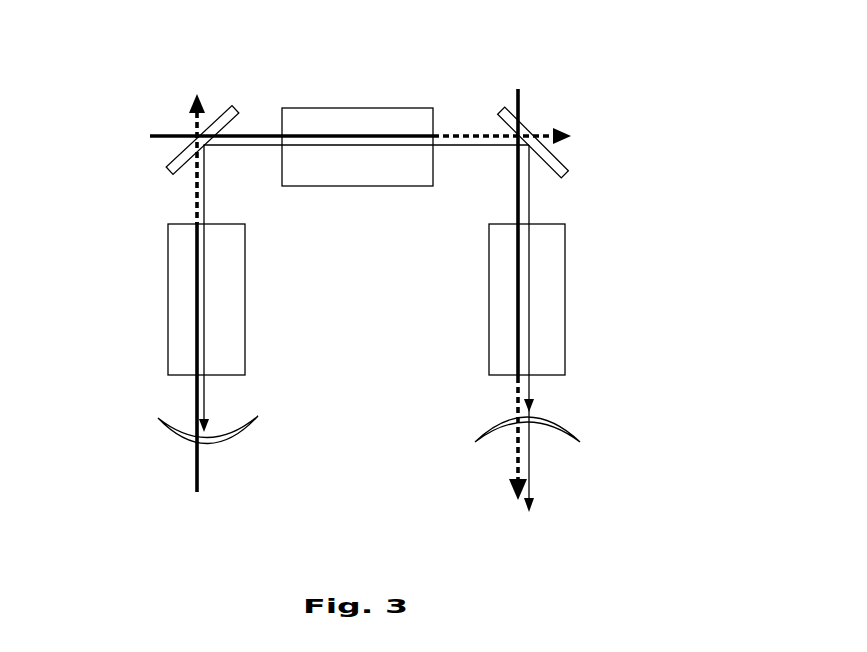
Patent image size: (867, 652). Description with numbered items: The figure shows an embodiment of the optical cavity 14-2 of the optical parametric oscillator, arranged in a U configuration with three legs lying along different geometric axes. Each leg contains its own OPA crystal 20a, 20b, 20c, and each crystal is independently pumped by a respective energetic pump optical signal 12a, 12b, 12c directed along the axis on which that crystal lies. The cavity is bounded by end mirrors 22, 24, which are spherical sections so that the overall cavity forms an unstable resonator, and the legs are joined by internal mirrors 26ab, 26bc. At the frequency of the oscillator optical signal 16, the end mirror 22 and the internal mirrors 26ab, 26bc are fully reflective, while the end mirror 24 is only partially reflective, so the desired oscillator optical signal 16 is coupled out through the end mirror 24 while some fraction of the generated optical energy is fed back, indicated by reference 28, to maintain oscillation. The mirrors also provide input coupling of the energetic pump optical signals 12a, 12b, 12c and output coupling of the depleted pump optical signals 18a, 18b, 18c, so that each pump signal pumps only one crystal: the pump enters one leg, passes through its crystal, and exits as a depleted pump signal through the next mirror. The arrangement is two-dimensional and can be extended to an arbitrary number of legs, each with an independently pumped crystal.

The energetic pump optical signal 12a is at (197, 474).
The energetic pump optical signal 12b is at (155, 133).
The energetic pump optical signal 12c is at (518, 92).
The optical cavity 14-2 is at (643, 413).
The oscillator optical signal 16 is at (532, 458).
The depleted pump optical signal 18a is at (193, 95).
The depleted pump optical signal 18b is at (565, 131).
The depleted pump optical signal 18c is at (517, 465).
The OPA crystal 20a is at (168, 298).
The OPA crystal 20b is at (357, 108).
The OPA crystal 20c is at (489, 298).
The end mirror 22 is at (160, 420).
The end mirror 24 is at (492, 424).
The internal mirror 26ab is at (168, 174).
The internal mirror 26bc is at (565, 176).
The fed-back optical energy 28 is at (222, 147).